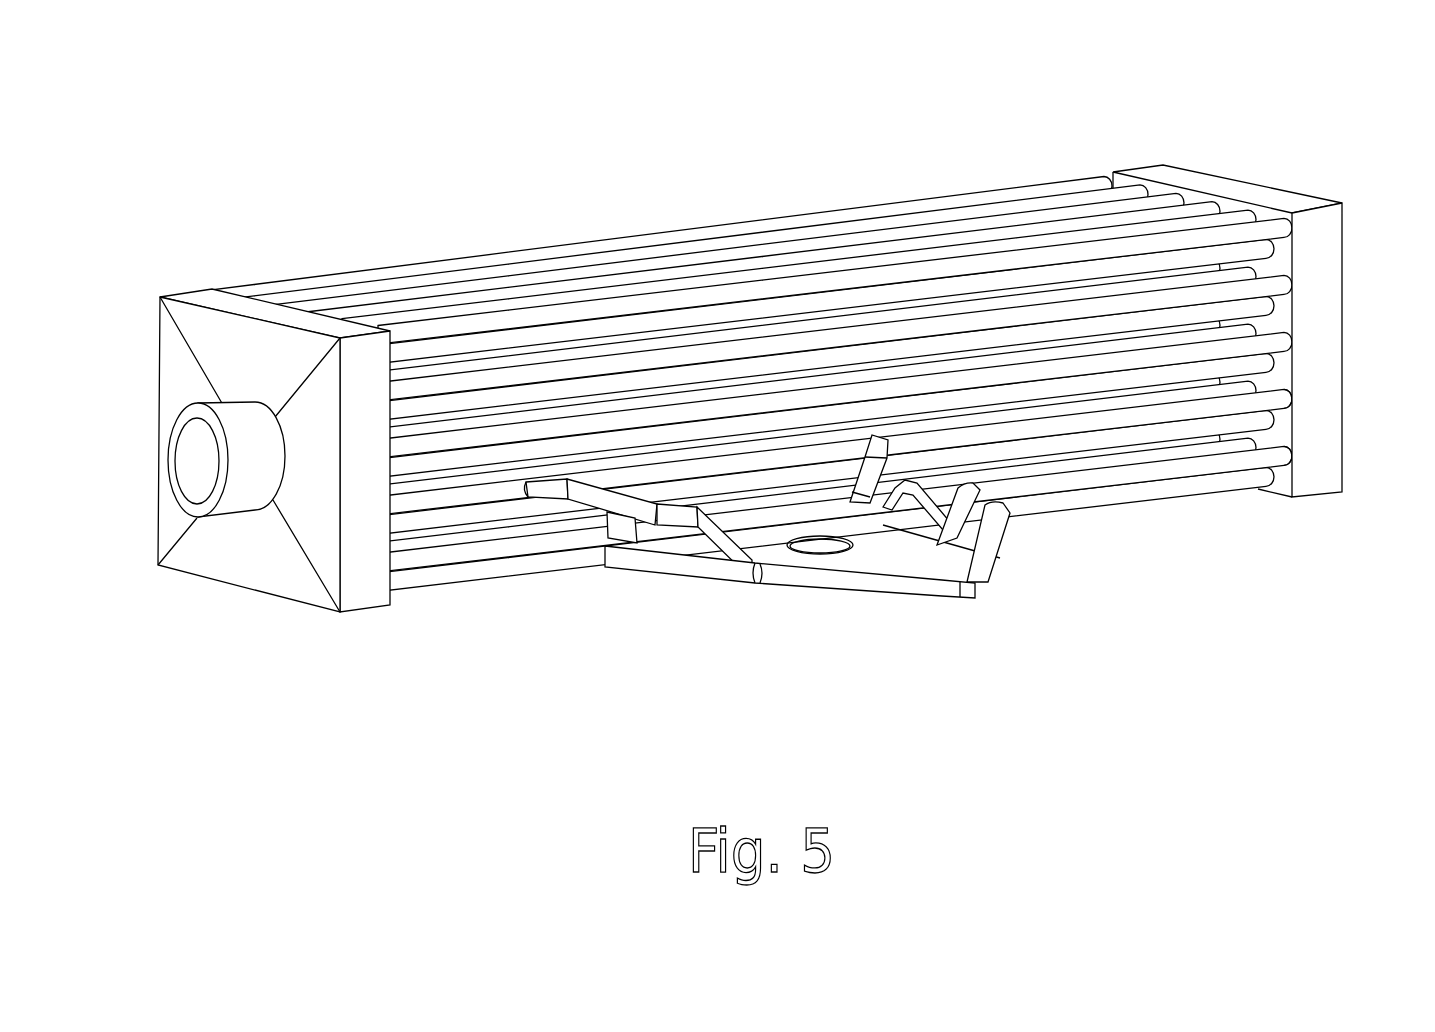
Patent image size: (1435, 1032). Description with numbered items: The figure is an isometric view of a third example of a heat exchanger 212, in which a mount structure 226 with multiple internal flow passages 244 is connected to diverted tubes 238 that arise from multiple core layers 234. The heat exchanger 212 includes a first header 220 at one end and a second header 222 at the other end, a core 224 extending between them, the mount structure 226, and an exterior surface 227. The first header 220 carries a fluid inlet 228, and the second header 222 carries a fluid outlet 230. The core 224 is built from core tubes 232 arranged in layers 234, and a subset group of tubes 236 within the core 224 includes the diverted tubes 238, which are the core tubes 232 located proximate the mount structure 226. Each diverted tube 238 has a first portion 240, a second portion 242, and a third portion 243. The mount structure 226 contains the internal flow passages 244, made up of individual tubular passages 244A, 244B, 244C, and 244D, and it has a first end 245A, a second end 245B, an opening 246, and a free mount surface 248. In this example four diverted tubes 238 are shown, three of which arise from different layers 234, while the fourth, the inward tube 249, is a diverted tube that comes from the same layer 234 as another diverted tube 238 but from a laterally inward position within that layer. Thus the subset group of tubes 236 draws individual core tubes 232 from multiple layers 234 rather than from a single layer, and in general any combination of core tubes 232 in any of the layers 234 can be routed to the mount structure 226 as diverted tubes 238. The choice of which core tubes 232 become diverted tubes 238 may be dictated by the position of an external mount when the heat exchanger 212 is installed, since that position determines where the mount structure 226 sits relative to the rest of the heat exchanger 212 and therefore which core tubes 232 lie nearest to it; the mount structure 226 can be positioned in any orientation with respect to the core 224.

The heat exchanger 212 is at (329, 163).
The first header 220 is at (193, 278).
The second header 222 is at (1221, 162).
The core 224 is at (668, 228).
The mount structure 226 is at (868, 607).
The exterior surface 227 is at (1107, 470).
The fluid inlet 228 is at (172, 433).
The fluid outlet 230 is at (1318, 305).
The core tubes 232 is at (905, 333).
The layers 234 is at (1283, 401).
The subset group of tubes 236 is at (608, 582).
The diverted tubes 238 is at (638, 562).
The first portions 240 is at (711, 575).
The second portions 242 is at (1005, 540).
The third portions 243 is at (790, 578).
The internal flow passages 244 is at (880, 532).
The tubular passage 244A is at (743, 590).
The tubular passage 244B is at (985, 592).
The tubular passage 244C is at (680, 570).
The tubular passage 244D is at (580, 565).
The first end 245A is at (700, 590).
The second end 245B is at (1002, 510).
The opening 246 is at (817, 543).
The free mount surface 248 is at (897, 532).
The inward tube 249 is at (1210, 450).